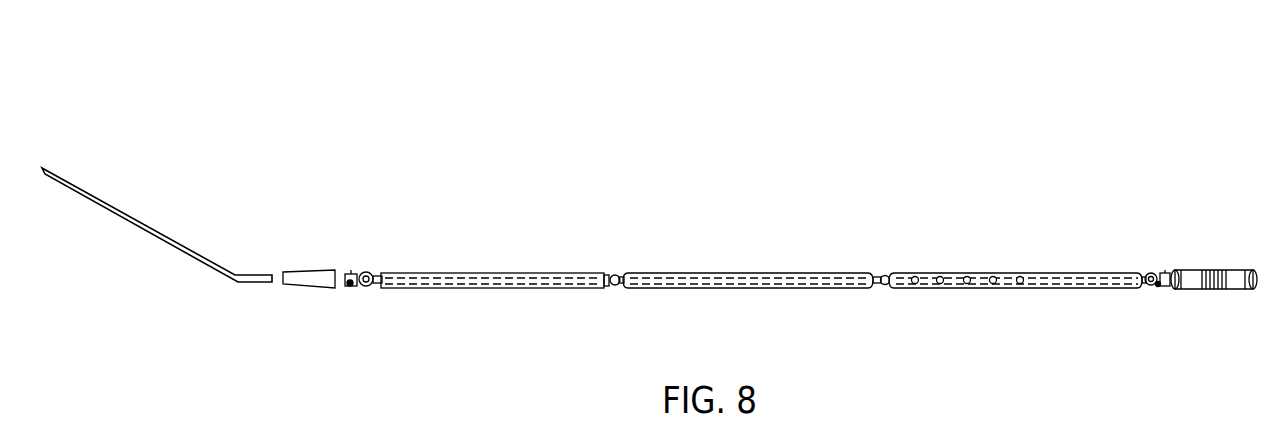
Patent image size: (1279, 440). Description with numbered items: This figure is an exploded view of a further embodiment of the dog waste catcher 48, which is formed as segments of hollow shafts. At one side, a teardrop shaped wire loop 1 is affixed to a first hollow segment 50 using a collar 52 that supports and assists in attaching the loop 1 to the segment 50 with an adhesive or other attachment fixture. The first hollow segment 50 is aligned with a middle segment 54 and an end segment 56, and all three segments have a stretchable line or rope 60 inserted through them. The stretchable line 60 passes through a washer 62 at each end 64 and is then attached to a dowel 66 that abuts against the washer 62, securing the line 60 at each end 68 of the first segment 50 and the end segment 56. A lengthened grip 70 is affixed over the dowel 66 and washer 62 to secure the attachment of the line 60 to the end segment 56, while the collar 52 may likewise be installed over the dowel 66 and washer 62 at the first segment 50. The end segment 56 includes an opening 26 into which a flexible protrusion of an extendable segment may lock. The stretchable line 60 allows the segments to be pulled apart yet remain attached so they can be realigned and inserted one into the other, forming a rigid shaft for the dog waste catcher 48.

The teardrop shaped wire loop 1 is at (157, 232).
The dog waste catcher 48 is at (657, 160).
The first hollow segment 50 is at (493, 273).
The collar 52 is at (313, 287).
The middle segment 54 is at (733, 272).
The end segment 56 is at (977, 275).
The opening 26 is at (914, 277).
The stretchable line 60 is at (533, 278).
The washer 62 is at (371, 277).
The end 64 is at (350, 285).
The dowel 66 is at (352, 272).
The end 68 is at (1158, 286).
The grip 70 is at (1196, 290).